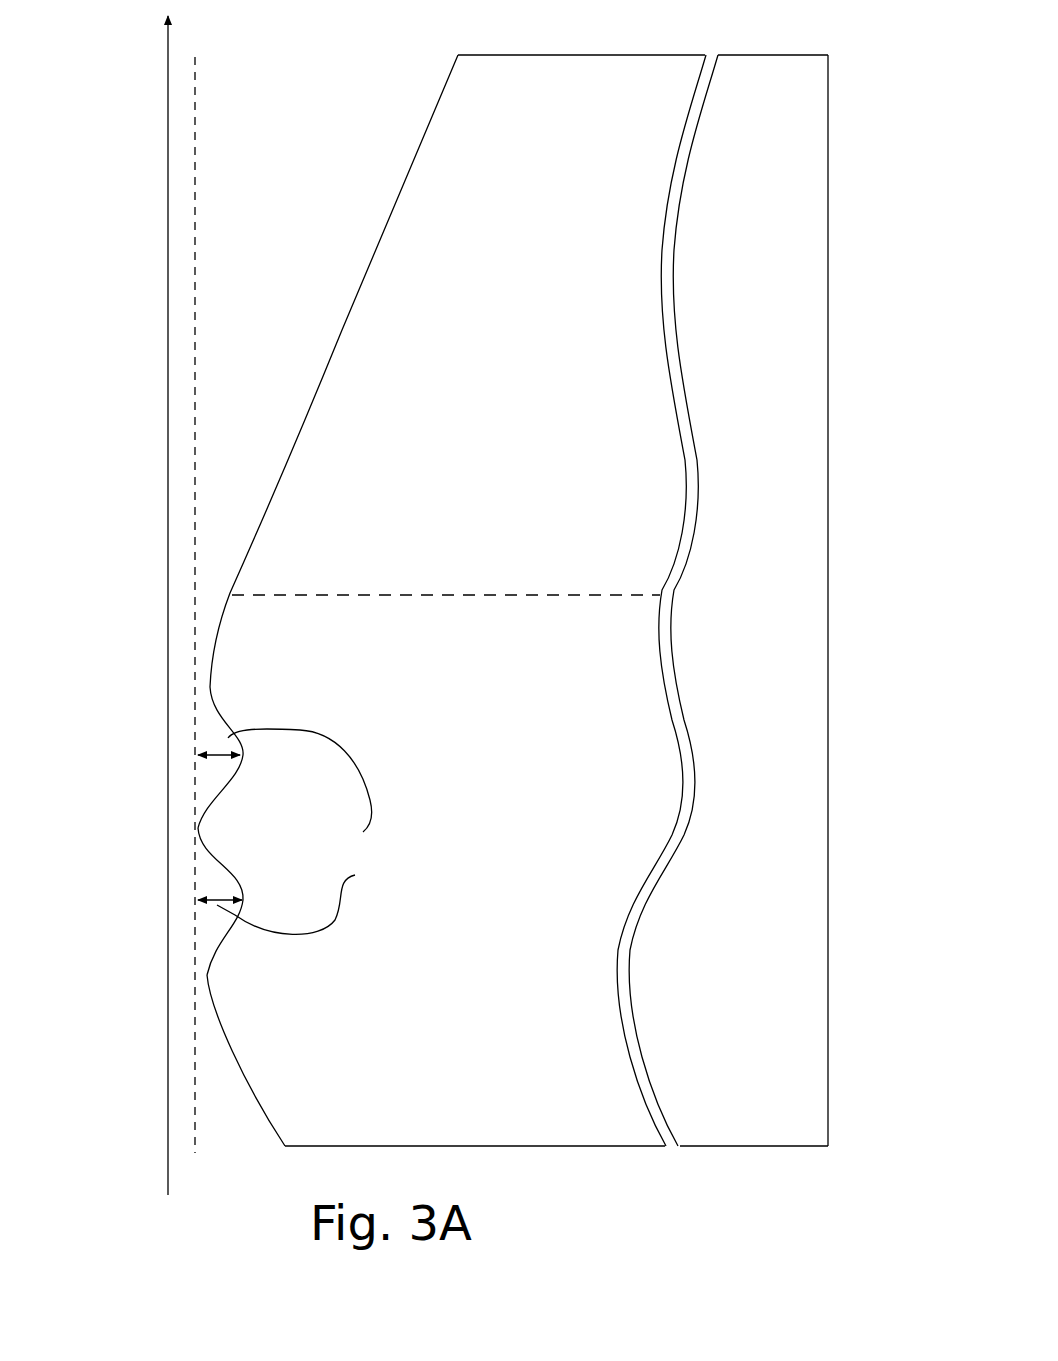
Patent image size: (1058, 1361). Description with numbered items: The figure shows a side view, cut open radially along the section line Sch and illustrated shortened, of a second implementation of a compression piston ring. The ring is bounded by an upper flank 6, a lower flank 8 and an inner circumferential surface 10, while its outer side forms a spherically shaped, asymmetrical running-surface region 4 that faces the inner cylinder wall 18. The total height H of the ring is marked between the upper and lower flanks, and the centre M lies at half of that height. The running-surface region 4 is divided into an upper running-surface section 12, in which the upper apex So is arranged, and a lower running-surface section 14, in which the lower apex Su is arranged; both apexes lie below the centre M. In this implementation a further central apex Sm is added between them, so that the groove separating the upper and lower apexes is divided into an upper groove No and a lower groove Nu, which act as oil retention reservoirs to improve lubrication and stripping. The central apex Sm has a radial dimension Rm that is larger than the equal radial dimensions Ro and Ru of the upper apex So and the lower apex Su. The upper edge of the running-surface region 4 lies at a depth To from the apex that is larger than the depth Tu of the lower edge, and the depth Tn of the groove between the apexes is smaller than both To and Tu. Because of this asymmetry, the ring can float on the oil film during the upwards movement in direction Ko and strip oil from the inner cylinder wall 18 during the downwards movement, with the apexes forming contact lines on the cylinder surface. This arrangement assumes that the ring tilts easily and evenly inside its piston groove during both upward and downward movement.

The running-surface region 4 is at (348, 298).
The upper flank 6 is at (560, 55).
The lower flank 8 is at (440, 1150).
The inner circumferential surface 10 is at (828, 575).
The upper running-surface section 12 is at (121, 598).
The lower running-surface section 14 is at (121, 931).
The inner cylinder wall 18 is at (197, 183).
The upstroke direction Ko is at (168, 380).
The section line Sch is at (662, 1152).
The depth of the groove Tn is at (363, 832).
The upper groove No is at (121, 745).
The lower groove Nu is at (121, 878).
The depth of the upper edge To is at (197, 57).
The depth of the lower edge Tu is at (283, 1145).
The radial dimension of the upper apex Ro is at (826, 697).
The radial dimension of the central apex Rm is at (826, 838).
The radial dimension of the lower apex Ru is at (826, 982).
The total height H is at (598, 1144).
The centre M is at (427, 519).
The upper apex So is at (213, 678).
The central apex Sm is at (205, 822).
The lower apex Su is at (210, 980).